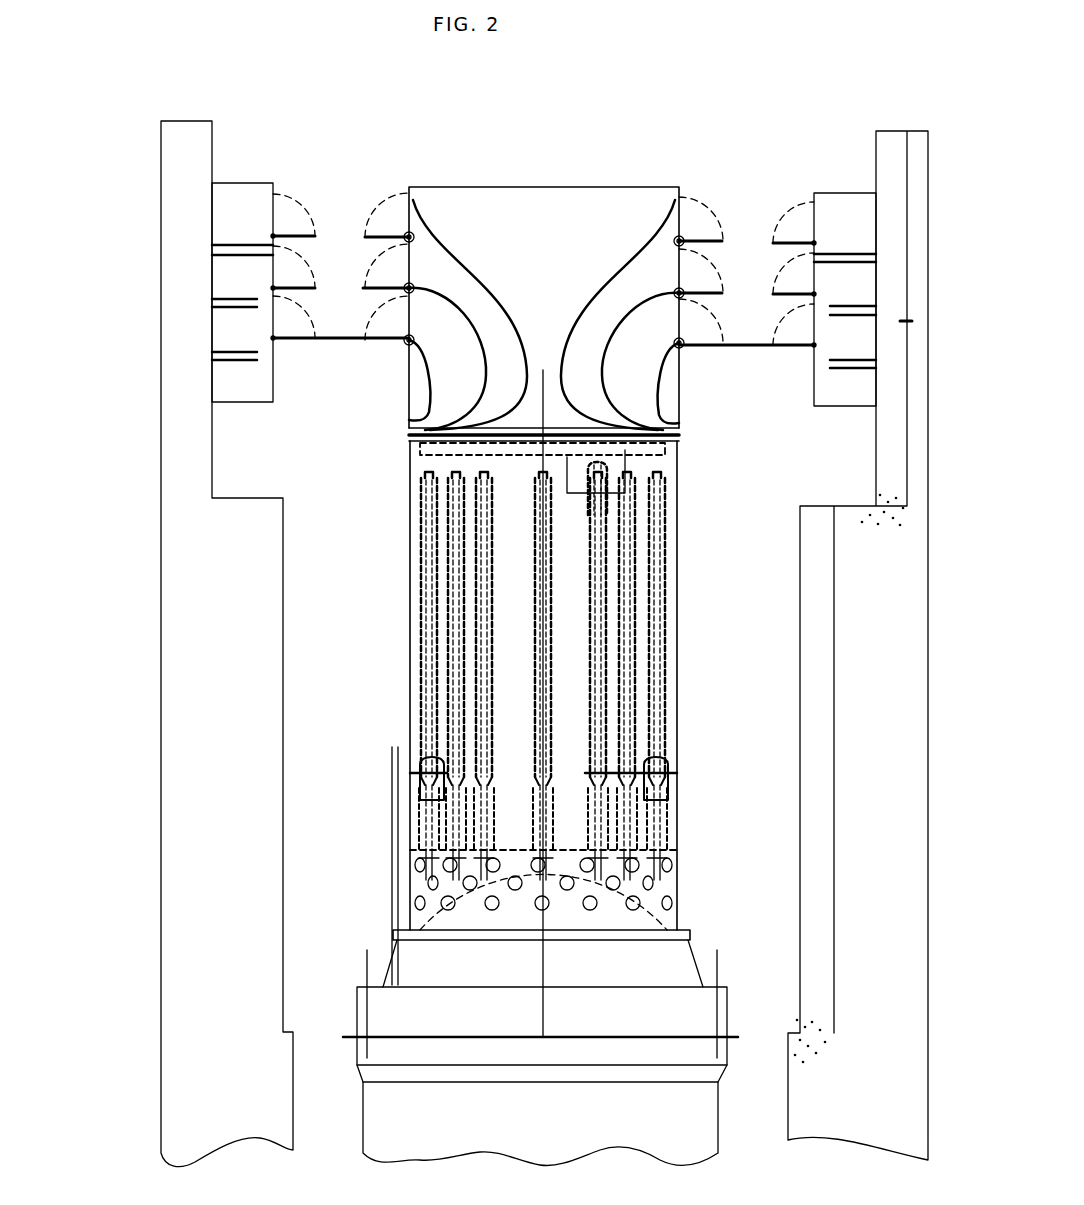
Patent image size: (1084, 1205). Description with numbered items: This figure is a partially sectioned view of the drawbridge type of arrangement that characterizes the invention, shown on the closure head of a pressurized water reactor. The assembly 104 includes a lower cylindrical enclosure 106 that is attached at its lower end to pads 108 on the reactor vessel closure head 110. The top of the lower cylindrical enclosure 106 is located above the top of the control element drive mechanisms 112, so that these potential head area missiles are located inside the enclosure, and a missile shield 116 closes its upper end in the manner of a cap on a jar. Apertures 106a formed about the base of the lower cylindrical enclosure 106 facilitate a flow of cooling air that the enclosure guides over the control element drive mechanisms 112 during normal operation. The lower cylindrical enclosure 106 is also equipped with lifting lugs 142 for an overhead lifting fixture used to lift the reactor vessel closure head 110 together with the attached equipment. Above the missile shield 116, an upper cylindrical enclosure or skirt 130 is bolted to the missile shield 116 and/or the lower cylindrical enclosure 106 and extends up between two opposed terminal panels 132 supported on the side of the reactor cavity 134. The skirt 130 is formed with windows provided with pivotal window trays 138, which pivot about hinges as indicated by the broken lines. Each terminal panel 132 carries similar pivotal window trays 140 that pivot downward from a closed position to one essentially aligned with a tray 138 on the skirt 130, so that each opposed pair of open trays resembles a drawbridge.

The assembly 104 is at (386, 497).
The lower cylindrical enclosure 106 is at (410, 628).
The apertures 106a is at (414, 900).
The pads 108 is at (400, 930).
The reactor vessel closure head 110 is at (427, 967).
The control element drive mechanisms 112 is at (458, 597).
The missile shield 116 is at (420, 447).
The upper cylindrical enclosure 130 is at (450, 187).
The terminal panels 132 is at (248, 195).
The reactor cavity 134 is at (332, 687).
The window trays 138 is at (383, 287).
The window trays 140 is at (797, 293).
The lifting lugs 142 is at (590, 478).